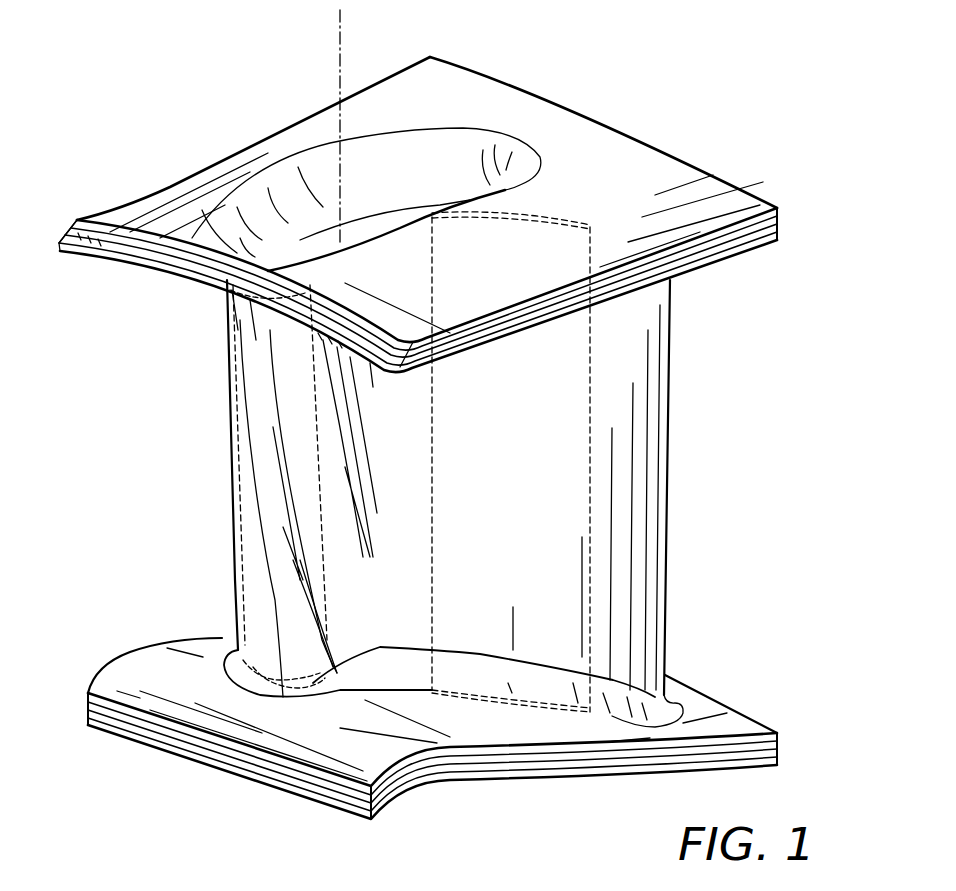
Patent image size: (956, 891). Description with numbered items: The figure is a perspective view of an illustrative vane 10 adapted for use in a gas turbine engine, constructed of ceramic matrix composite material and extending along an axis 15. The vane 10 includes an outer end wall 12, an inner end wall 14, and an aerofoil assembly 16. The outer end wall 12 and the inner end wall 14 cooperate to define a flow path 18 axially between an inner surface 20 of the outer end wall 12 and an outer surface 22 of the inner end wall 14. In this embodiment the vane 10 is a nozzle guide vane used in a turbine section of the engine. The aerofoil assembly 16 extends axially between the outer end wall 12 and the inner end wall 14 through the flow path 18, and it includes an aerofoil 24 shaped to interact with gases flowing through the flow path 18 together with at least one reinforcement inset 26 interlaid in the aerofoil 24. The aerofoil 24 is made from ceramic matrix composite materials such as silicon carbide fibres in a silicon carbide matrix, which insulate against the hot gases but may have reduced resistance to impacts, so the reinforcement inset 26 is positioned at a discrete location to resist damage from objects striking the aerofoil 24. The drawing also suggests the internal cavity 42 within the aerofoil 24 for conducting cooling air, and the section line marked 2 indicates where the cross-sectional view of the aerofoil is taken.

The vane 10 is at (778, 100).
The outer end wall 12 is at (625, 127).
The inner end wall 14 is at (446, 689).
The axis 15 is at (340, 44).
The aerofoil assembly 16 is at (662, 503).
The flow path 18 is at (203, 515).
The inner surface 20 is at (116, 265).
The outer surface 22 is at (122, 673).
The aerofoil 24 is at (665, 647).
The reinforcement inset 26 is at (595, 603).
The internal cavity 42 is at (267, 233).
The section line 2- 2 is at (217, 435).